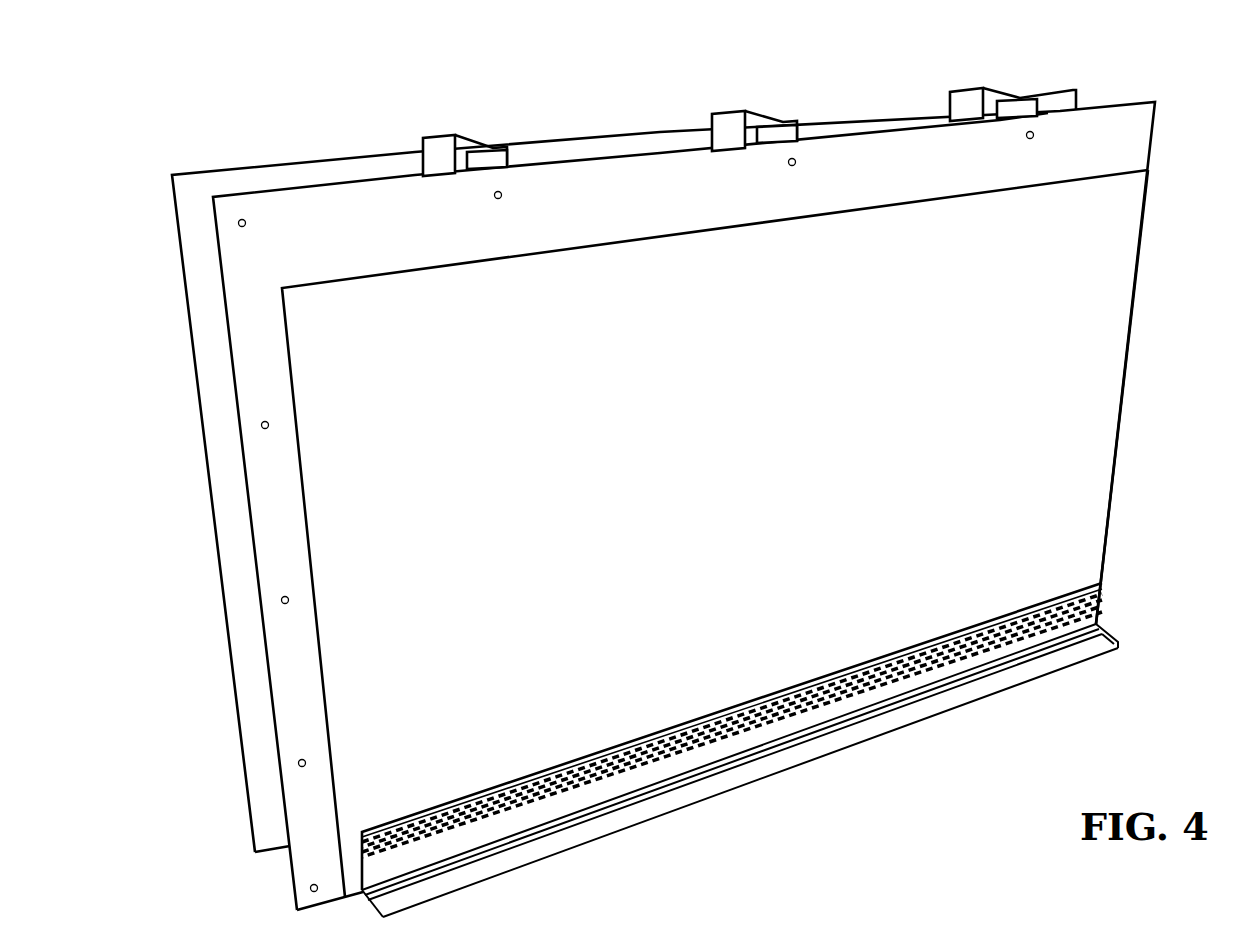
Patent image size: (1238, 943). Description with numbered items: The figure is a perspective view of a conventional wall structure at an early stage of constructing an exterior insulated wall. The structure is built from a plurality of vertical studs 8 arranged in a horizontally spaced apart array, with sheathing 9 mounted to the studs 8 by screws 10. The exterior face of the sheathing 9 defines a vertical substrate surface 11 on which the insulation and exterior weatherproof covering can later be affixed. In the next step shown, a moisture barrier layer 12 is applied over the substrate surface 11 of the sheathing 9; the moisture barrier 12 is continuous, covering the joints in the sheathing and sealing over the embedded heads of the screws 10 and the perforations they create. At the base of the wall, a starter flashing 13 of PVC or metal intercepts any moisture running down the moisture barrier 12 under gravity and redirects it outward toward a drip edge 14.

The vertical studs 8 is at (463, 142).
The sheathing 9 is at (1112, 146).
The screws 10 is at (247, 222).
The vertical substrate surface 11 is at (252, 271).
The moisture barrier layer 12 is at (331, 340).
The starter flashing 13 is at (460, 788).
The drip edge 14 is at (466, 874).